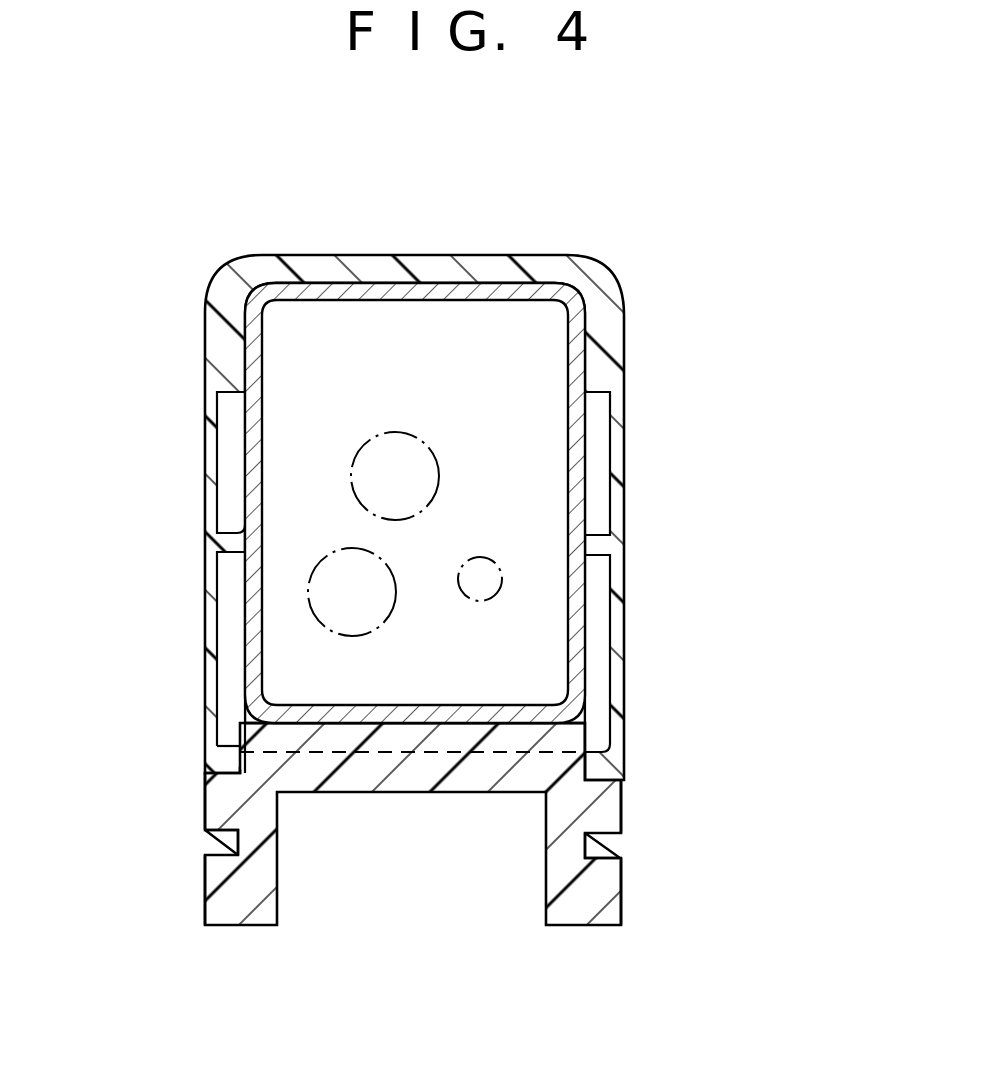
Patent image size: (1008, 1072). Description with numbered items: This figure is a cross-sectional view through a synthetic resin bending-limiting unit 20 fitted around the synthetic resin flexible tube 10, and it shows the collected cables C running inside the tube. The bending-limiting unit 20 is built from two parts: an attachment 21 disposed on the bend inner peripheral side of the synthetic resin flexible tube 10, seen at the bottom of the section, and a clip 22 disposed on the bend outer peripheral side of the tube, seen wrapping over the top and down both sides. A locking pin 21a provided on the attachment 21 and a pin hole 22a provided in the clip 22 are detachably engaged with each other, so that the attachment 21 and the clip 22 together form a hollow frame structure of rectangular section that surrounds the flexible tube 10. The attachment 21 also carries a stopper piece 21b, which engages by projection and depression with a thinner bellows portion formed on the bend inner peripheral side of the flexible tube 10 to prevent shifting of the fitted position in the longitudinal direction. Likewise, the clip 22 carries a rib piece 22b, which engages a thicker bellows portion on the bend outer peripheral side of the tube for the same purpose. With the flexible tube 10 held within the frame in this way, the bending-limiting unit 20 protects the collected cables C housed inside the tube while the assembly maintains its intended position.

The synthetic resin bending-limiting unit 20 is at (478, 549).
The attachment 21 is at (433, 824).
The locking pin 21a is at (213, 803).
The stopper piece 21b is at (437, 744).
The clip 22 is at (431, 544).
The pin hole 22a is at (203, 848).
The rib piece 22b is at (438, 272).
The synthetic resin flexible tube 10 is at (484, 300).
The collected cables C is at (428, 537).